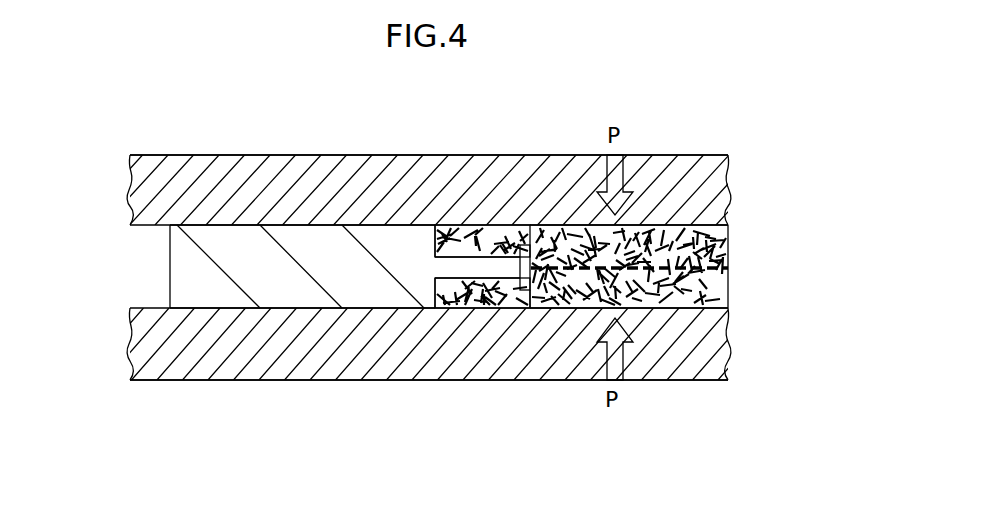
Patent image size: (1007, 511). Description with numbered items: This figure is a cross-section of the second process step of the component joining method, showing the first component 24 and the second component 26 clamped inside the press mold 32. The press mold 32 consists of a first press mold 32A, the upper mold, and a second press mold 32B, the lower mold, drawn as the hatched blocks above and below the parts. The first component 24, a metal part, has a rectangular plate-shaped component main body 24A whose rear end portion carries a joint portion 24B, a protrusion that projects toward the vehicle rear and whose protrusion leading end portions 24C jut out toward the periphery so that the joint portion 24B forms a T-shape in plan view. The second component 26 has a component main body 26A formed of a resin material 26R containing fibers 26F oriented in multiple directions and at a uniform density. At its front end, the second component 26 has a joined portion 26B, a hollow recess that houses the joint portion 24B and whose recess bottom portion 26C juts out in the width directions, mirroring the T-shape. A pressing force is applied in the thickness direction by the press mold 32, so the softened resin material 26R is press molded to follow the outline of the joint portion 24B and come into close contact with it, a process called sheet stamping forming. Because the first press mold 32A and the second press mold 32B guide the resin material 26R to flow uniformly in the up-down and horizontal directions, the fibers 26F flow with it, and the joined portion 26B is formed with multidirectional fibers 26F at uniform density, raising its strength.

The first component 24 is at (159, 262).
The component main body 24A is at (323, 243).
The joint portion 24B is at (459, 261).
The protrusion leading end portions 24C is at (523, 246).
The second component 26 is at (746, 250).
The component main body 26A is at (648, 245).
The joined portion 26B is at (473, 272).
The recess bottom portion 26C is at (535, 280).
The resin material 26R is at (728, 232).
The fibers 26F is at (729, 289).
The press mold 32 is at (165, 398).
The first press mold 32A is at (255, 210).
The second press mold 32B is at (290, 360).